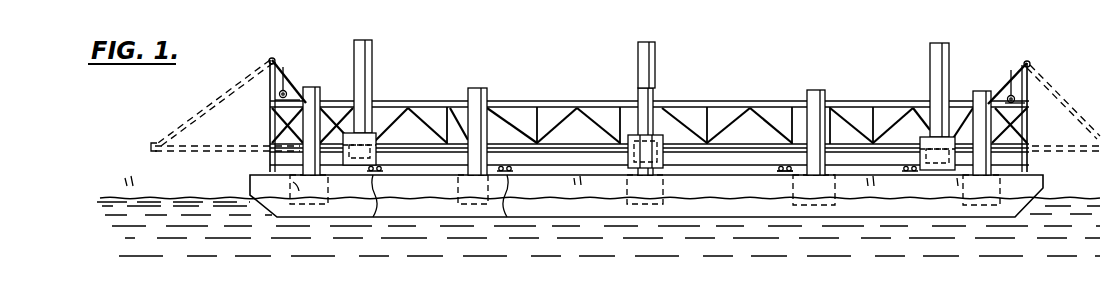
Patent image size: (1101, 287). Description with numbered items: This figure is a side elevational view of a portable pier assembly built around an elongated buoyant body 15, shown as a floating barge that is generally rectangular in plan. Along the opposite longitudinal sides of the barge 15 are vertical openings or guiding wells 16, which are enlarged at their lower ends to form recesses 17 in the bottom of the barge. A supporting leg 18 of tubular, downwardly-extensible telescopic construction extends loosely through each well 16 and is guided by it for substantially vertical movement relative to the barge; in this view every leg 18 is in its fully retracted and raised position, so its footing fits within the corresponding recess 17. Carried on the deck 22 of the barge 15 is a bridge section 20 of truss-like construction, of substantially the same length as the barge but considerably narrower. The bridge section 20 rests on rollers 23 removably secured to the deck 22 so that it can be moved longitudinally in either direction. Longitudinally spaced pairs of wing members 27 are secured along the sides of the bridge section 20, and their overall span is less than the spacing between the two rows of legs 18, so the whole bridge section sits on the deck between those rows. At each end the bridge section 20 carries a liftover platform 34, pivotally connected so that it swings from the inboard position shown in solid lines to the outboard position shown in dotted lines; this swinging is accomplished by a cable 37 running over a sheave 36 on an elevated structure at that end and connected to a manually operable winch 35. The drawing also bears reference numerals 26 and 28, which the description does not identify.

The buoyant body 15 is at (1030, 186).
The guiding wells 16 is at (292, 182).
The recesses 17 is at (314, 212).
The supporting leg 18 is at (317, 85).
The bridge section 20 is at (540, 101).
The deck 22 is at (735, 175).
The rollers 23 is at (373, 217).
The vertical pillars 26 is at (365, 52).
The wing members 27 is at (377, 146).
The rollers 28 is at (786, 168).
The liftover platform 34 is at (182, 141).
The manually operable winch 35 is at (279, 97).
The sheave 36 is at (270, 58).
The cable 37 is at (278, 62).